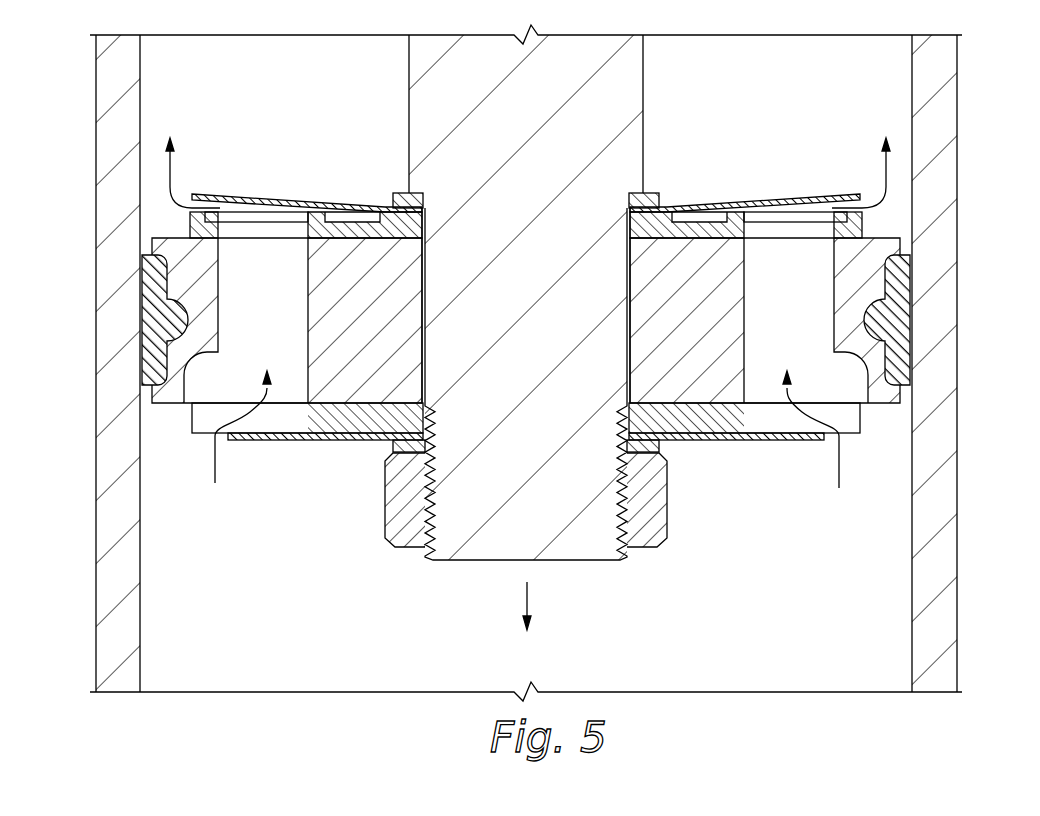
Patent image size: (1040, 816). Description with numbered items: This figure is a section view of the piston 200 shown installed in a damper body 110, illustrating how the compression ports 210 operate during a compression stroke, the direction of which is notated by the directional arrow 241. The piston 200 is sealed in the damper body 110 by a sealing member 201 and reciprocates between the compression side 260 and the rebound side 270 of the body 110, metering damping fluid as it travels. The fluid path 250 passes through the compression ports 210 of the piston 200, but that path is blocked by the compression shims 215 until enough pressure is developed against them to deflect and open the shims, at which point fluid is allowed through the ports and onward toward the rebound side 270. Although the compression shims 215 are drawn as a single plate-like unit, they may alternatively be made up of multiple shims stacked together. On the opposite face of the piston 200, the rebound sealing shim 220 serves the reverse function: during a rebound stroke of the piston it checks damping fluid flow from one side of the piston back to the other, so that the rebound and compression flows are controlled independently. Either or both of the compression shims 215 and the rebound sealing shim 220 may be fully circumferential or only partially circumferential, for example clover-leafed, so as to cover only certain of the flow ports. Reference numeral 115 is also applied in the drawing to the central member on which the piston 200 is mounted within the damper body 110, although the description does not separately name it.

The damper body 110 is at (957, 114).
The mandrel 115 is at (643, 73).
The piston 200 is at (180, 289).
The sealing member 201 is at (887, 330).
The compression ports 210 is at (230, 327).
The compression shims 215 is at (287, 202).
The rebound sealing shim 220 is at (323, 440).
The directional arrow 241 is at (527, 597).
The fluid path 250 is at (172, 166).
The compression side 260 is at (773, 534).
The rebound side 270 is at (773, 130).